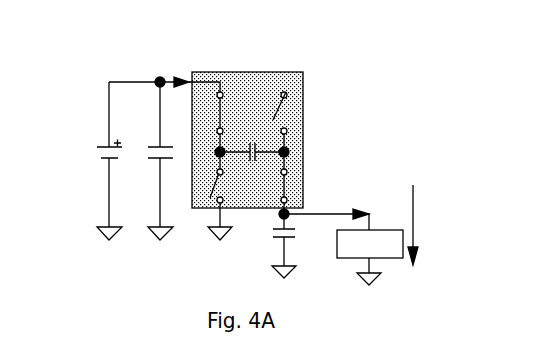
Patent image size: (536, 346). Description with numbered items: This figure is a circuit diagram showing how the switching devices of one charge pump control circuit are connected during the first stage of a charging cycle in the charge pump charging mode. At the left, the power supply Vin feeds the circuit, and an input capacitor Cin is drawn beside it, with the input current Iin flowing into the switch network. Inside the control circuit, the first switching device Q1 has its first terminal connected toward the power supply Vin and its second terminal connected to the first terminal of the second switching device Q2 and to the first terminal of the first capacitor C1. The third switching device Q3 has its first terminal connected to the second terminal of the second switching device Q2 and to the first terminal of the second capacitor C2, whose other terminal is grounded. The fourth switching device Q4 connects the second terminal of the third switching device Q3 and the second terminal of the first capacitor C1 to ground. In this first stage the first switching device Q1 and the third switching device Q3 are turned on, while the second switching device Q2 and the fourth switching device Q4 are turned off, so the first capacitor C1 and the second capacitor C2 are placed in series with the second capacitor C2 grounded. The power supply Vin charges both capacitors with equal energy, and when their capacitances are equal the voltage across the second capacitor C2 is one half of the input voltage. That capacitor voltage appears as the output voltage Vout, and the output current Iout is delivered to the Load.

The power supply Vin is at (97, 161).
The input capacitor Cin is at (141, 161).
The input current Iin is at (187, 71).
The first switching device Q1 is at (211, 122).
The second switching device Q2 is at (274, 122).
The third switching device Q3 is at (272, 183).
The fourth switching device Q4 is at (224, 196).
The first capacitor C1 is at (252, 142).
The second capacitor C2 is at (276, 243).
The output current Iout is at (326, 210).
The output voltage Vout is at (389, 216).
The load Load is at (370, 257).